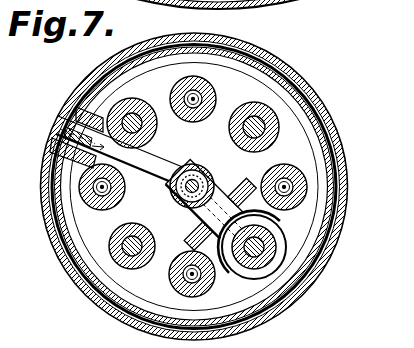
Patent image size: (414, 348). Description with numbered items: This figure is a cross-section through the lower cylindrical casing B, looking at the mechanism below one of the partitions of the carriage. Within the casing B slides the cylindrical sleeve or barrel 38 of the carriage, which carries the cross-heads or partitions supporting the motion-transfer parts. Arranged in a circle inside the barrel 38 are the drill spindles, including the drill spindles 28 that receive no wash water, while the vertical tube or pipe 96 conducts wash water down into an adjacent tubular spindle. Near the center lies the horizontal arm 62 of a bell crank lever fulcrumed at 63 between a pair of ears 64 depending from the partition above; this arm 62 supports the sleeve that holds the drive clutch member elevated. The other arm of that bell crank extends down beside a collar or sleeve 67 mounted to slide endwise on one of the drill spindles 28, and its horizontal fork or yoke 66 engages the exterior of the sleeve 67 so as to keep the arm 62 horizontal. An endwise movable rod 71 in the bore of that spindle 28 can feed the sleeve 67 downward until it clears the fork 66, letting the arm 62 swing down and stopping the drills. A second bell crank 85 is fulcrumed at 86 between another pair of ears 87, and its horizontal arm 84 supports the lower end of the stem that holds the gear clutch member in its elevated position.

The cylindrical sleeve or barrel 38 is at (312, 122).
The lower cylindrical casing B is at (340, 158).
The ears 87 is at (117, 105).
The endwise movable rod 71 is at (248, 106).
The vertical tube or pipe 96 is at (171, 280).
The collar or sleeve 67 is at (287, 233).
The drill spindles 28 is at (275, 254).
The fork or yoke 66 is at (281, 214).
The horizontal arm of bell crank lever 62 is at (187, 163).
The horizontal arm of bell crank 84 is at (153, 172).
The ears 64 is at (250, 180).
The fulcrum 63 is at (192, 241).
The bell crank 85 is at (60, 133).
The fulcrum 86 is at (56, 160).